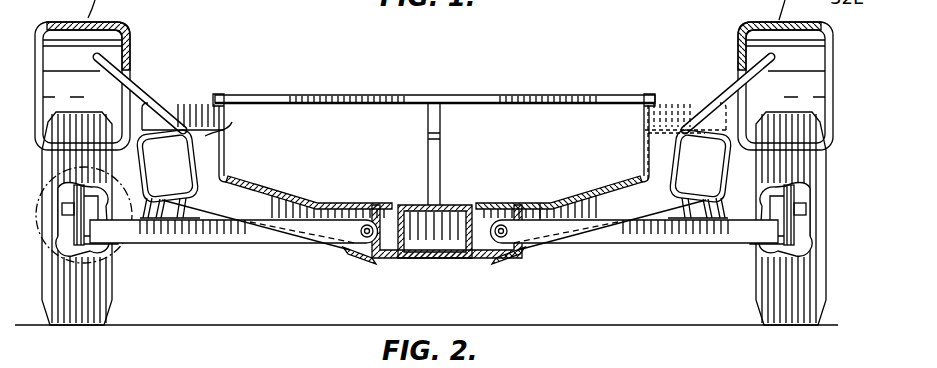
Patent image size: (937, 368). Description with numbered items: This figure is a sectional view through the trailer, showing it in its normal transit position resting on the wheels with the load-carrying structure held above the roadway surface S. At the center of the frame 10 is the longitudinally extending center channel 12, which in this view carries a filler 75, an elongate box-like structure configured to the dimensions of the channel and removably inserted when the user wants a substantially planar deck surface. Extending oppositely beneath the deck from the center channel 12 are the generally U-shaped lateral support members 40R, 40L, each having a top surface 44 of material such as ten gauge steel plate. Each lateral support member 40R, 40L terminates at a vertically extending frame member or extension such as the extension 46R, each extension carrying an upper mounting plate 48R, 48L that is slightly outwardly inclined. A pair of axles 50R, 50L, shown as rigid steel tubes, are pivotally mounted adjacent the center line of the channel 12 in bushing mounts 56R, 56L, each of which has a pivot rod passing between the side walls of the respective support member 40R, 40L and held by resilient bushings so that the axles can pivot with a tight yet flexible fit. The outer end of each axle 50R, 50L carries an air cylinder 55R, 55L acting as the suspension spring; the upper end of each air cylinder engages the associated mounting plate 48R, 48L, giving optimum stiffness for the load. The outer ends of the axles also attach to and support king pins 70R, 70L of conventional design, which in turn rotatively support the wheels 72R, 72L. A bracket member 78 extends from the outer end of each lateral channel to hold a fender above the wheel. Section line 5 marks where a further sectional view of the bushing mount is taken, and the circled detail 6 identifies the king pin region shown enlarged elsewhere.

The frame 10 is at (507, 80).
The center channel 12 is at (412, 202).
The filler 75 is at (447, 203).
The top surface 44 is at (535, 190).
The section line 5- 5 is at (498, 196).
The detail circle 6 is at (104, 240).
The lateral support member 40R is at (272, 213).
The lateral support member 40L is at (622, 195).
The vertically-extending frame member 46R is at (236, 120).
The upper mounting plate 48R is at (203, 96).
The upper mounting plate 48L is at (690, 100).
The axle 50R is at (268, 233).
The axle 50L is at (590, 237).
The air cylinder 55R is at (185, 160).
The air cylinder 55L is at (655, 128).
The bushing mount 56R is at (377, 258).
The bushing mount 56L is at (503, 246).
The king pin 70R is at (98, 247).
The king pin 70L is at (802, 189).
The wheel 72R is at (115, 287).
The wheel 72L is at (752, 266).
The bracket member 78 is at (152, 86).
The roadway surface S is at (444, 325).